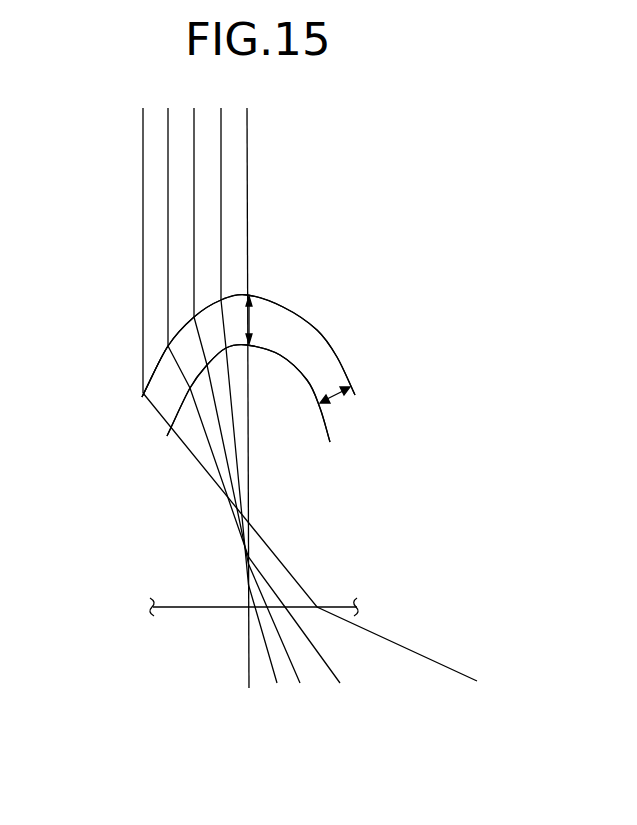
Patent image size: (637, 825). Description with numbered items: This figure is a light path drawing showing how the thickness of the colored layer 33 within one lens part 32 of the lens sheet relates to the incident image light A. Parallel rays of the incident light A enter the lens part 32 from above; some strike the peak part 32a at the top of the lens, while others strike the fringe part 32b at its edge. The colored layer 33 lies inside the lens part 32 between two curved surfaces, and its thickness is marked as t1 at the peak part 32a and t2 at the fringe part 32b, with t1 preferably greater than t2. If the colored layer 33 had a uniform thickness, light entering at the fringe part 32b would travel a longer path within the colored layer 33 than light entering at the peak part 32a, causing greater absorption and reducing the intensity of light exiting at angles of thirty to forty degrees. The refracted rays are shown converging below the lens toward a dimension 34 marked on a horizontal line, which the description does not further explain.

The incident parallel light A is at (246, 143).
The lens part 32 is at (318, 313).
The peak part 32a is at (247, 295).
The fringe part 32b is at (143, 393).
The colored layer 33 is at (328, 356).
The thickness at the peak part t1 is at (251, 323).
The thickness of the fringe part t2 is at (335, 397).
The image plane / spot width 34 is at (180, 608).